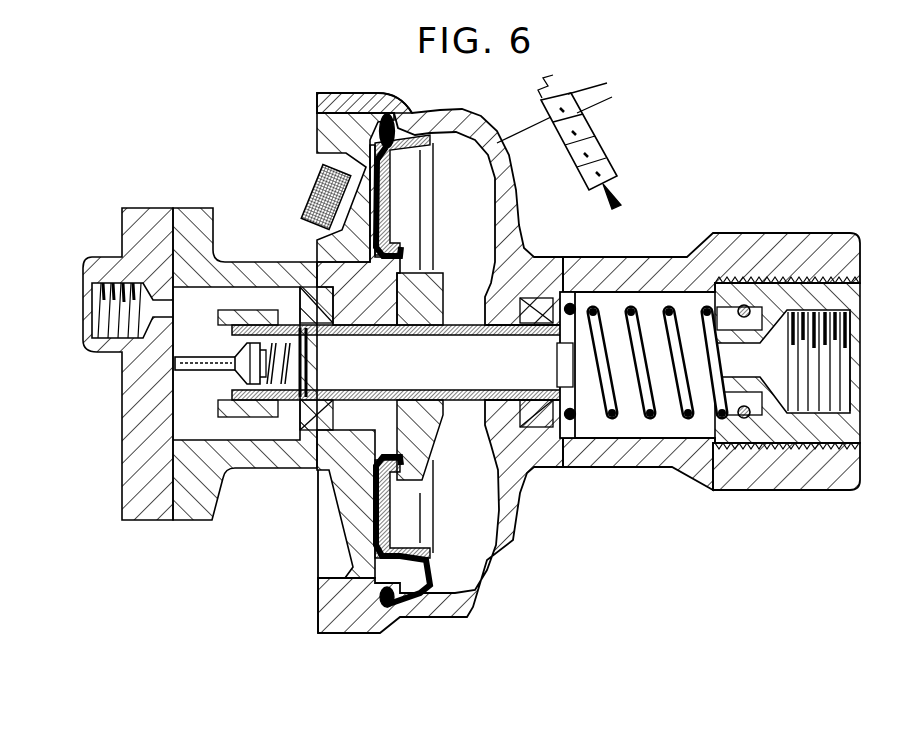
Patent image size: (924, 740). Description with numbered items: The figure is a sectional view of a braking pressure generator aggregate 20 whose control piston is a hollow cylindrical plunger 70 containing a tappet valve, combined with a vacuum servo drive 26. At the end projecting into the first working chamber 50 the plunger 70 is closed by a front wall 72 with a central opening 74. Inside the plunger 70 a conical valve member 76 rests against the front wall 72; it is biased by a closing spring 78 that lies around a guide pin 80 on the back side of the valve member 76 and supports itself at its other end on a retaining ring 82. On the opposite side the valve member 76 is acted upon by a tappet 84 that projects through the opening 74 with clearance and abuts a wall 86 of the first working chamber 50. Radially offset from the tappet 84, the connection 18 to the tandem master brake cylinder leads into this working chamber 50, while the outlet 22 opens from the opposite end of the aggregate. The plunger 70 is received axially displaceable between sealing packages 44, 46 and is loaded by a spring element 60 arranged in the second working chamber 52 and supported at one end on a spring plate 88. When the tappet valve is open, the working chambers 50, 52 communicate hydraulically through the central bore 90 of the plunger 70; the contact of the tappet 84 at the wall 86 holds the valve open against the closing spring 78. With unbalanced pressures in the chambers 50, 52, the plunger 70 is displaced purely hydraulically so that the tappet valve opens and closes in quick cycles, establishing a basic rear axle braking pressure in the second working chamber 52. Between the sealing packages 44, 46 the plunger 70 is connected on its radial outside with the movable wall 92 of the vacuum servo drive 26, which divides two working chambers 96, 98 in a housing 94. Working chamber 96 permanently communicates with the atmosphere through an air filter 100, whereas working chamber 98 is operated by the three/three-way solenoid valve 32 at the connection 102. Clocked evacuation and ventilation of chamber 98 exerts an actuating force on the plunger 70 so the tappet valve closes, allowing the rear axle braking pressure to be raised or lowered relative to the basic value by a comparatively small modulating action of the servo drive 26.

The connection 18 is at (95, 312).
The braking pressure generator aggregate 20 is at (669, 216).
The outlet threaded port 22 is at (835, 362).
The vacuum servo drive 26 is at (413, 331).
The 3/3-way solenoid valve 32 is at (605, 160).
The sealing package 44 is at (307, 312).
The sealing package 46 is at (543, 316).
The first working chamber 50 is at (233, 289).
The second working chamber 52 is at (695, 295).
The spring element 60 is at (640, 440).
The plunger 70 is at (452, 401).
The front wall 72 is at (223, 413).
The central opening 74 is at (213, 382).
The conical valve member 76 is at (255, 386).
The closing spring 78 is at (288, 386).
The guide pin 80 is at (270, 308).
The retaining ring 82 is at (307, 338).
The tappet 84 is at (192, 362).
The wall 86 is at (172, 384).
The spring plate 88 is at (575, 430).
The central bore 90 is at (453, 332).
The movable wall 92 is at (412, 128).
The housing 94 is at (357, 105).
The working chamber 96 is at (337, 130).
The working chamber 98 is at (490, 183).
The air filter 100 is at (313, 176).
The connection 102 is at (497, 148).